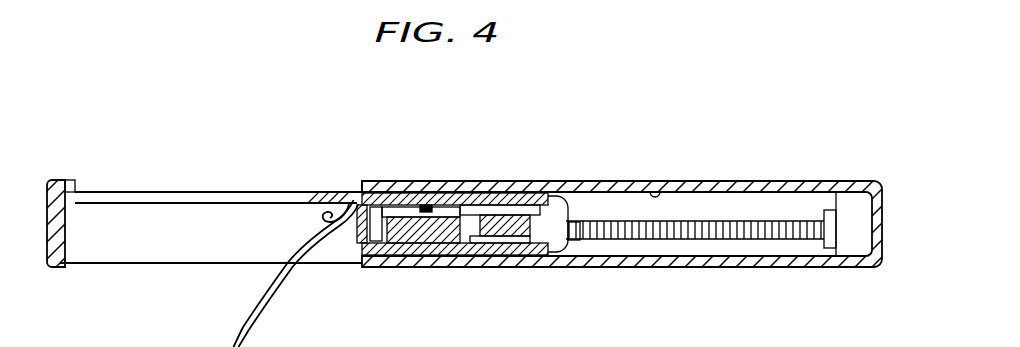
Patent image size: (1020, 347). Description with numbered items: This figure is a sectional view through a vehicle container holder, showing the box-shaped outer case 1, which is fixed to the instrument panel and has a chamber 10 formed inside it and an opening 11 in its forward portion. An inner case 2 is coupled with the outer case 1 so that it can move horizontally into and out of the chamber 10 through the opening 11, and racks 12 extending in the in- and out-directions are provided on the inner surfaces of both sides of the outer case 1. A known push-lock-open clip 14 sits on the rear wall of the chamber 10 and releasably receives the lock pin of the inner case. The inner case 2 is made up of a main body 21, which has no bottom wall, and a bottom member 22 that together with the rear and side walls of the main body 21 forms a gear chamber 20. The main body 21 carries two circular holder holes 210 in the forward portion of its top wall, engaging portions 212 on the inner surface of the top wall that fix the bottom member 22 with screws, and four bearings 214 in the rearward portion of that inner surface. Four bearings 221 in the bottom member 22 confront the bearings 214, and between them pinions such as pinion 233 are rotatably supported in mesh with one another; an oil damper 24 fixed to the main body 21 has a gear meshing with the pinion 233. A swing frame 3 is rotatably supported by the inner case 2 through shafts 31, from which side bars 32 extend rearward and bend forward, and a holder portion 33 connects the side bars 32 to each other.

The outer case 1 is at (602, 267).
The inner case 2 is at (472, 133).
The swing frame 3 is at (266, 323).
The chamber 10 is at (656, 191).
The opening 11 is at (362, 192).
The rack 12 is at (748, 241).
The push-lock-open clip 14 is at (830, 209).
The gear chamber 20 is at (560, 191).
The main body 21 is at (400, 192).
The bottom member 22 is at (427, 192).
The oil damper 24 is at (530, 258).
The shaft 31 is at (332, 214).
The side bar 32 is at (291, 257).
The holder portion 33 is at (175, 346).
The holder hole 210 is at (90, 192).
The engaging portion 212 is at (364, 257).
The bearing 214 is at (479, 191).
The bearing 221 is at (478, 257).
The pinion 233 is at (438, 257).